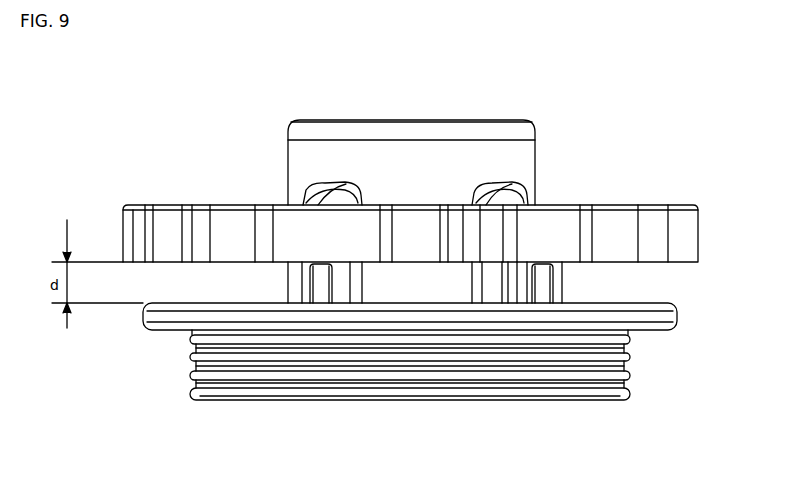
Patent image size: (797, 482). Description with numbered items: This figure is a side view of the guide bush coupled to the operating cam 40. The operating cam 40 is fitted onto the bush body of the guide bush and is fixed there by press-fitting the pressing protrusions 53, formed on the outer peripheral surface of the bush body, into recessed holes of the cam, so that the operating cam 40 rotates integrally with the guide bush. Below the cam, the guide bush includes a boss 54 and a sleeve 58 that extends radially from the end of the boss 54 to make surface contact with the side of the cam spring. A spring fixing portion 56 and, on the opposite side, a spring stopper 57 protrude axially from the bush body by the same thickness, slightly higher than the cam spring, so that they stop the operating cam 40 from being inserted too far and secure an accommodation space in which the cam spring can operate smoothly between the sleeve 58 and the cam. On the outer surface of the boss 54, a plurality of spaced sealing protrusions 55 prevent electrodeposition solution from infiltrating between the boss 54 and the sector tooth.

The operating cam 40 is at (628, 225).
The pressing protrusions 53 is at (341, 196).
The boss 54 is at (400, 401).
The sealing protrusion 55 is at (190, 375).
The spring fixing portion 56 is at (557, 283).
The spring stopper 57 is at (317, 278).
The sleeve 58 is at (656, 327).